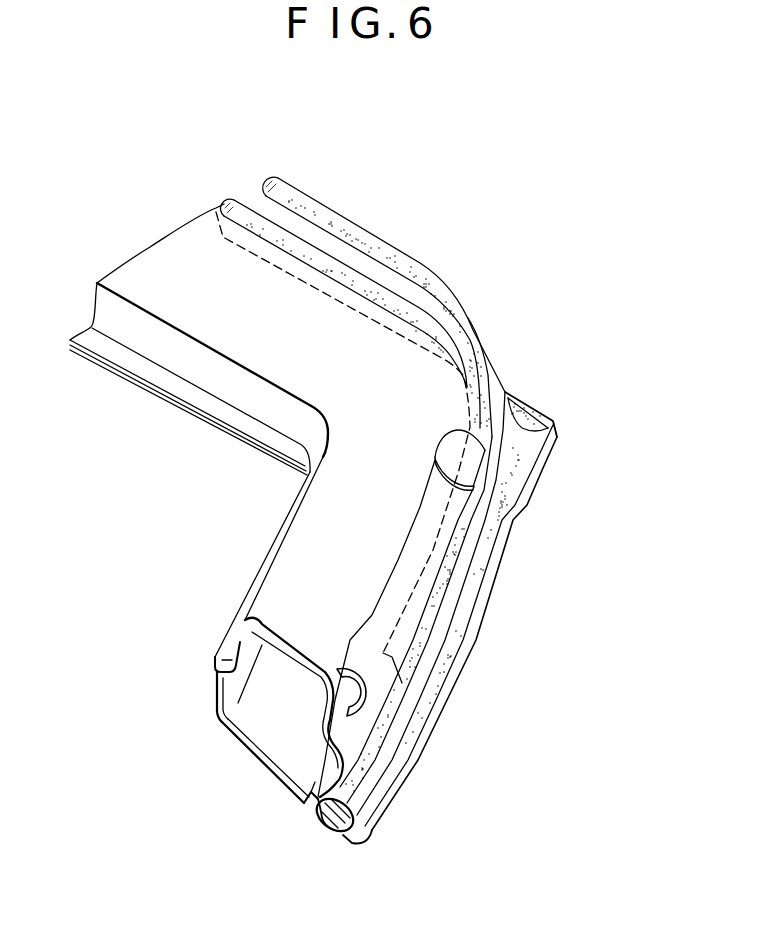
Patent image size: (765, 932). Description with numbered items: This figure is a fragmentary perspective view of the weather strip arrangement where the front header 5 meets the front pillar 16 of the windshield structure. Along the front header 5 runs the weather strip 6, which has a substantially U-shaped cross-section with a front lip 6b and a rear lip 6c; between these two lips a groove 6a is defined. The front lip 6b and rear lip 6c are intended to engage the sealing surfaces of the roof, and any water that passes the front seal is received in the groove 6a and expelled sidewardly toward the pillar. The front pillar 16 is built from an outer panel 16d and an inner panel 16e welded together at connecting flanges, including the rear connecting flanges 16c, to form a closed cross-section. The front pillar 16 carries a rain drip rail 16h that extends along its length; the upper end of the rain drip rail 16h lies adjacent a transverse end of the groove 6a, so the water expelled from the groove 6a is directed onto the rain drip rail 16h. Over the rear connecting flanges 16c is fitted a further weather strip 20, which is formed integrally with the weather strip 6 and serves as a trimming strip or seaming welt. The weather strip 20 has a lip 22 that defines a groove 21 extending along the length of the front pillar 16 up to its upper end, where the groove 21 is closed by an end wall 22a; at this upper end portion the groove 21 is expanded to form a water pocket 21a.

The front header 5 is at (150, 257).
The weather strip 6 is at (359, 282).
The groove 6a is at (380, 277).
The front lip 6b is at (250, 204).
The rear lip 6c is at (285, 182).
The front pillar 16 is at (260, 662).
The rear connecting flanges 16c is at (315, 808).
The outer panel 16d is at (257, 623).
The inner panel 16e is at (271, 768).
The rain drip rail 16h is at (368, 621).
The weather strip 20 is at (335, 840).
The groove 21 is at (415, 717).
The water pocket 21a is at (517, 445).
The lip 22 is at (543, 447).
The end wall 22a is at (523, 420).